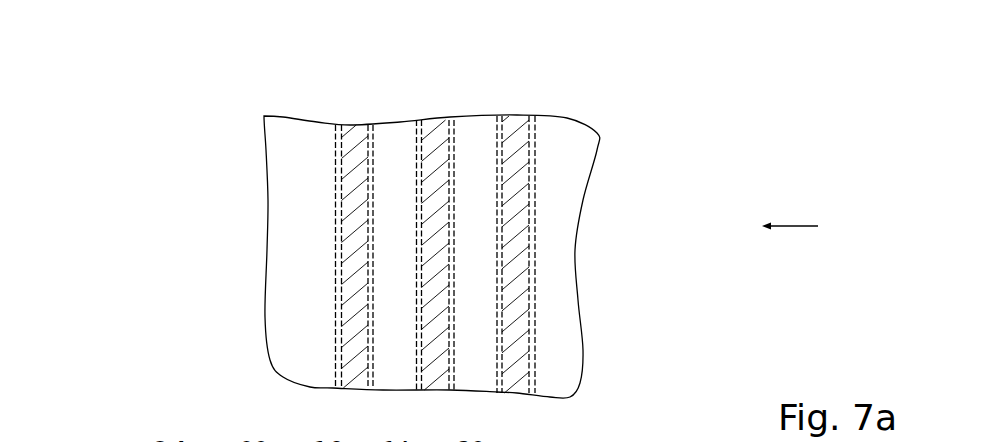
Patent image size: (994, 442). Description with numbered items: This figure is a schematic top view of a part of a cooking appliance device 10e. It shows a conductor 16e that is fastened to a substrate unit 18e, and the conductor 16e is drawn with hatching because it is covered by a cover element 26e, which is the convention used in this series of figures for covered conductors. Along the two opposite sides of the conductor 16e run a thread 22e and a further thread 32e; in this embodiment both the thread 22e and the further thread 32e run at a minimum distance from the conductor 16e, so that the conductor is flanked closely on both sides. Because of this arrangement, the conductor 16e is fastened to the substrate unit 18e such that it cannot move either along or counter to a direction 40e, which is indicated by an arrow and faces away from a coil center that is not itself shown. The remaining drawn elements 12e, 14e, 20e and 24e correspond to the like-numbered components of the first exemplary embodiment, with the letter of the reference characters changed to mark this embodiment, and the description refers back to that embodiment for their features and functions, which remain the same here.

The cooking appliance device 10e is at (173, 97).
The carrier 12e is at (175, 148).
The substrate layer 14e is at (397, 78).
The conductor 16e is at (356, 135).
The substrate unit 18e is at (174, 256).
The corner region 20e is at (233, 360).
The thread 22e is at (337, 135).
The insulation region 24e is at (337, 172).
The cover element 26e is at (268, 203).
The further thread 32e is at (373, 150).
The direction 40e is at (793, 223).